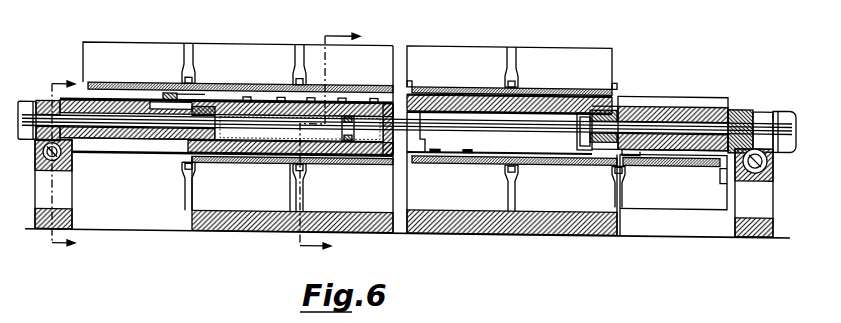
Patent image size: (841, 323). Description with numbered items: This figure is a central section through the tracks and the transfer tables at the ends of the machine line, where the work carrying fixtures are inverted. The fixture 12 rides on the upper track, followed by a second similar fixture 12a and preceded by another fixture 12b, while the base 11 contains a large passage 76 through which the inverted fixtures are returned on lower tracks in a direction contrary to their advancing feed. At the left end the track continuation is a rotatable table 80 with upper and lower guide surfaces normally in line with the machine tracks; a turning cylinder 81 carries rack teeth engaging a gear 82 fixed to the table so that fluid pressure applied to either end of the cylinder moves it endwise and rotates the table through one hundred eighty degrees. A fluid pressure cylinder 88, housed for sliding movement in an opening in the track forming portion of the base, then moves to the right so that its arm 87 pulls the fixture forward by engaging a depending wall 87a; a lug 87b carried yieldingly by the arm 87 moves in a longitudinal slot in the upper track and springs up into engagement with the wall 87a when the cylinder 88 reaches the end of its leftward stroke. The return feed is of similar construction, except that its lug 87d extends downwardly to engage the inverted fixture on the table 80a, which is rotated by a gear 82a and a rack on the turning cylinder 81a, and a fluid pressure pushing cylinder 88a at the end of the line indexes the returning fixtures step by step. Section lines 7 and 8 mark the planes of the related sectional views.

The section line 7- 7 is at (63, 164).
The section line 8- 8 is at (330, 148).
The base 11 is at (518, 225).
The fixture 12 is at (358, 46).
The second fixture 12a is at (273, 46).
The fixture 12b is at (435, 48).
The passage 76 is at (257, 205).
The rotatable table 80 is at (82, 95).
The rotatable table 80a is at (717, 89).
The turning cylinder 81 is at (38, 159).
The turning cylinder 81a is at (737, 182).
The gear 82 is at (36, 100).
The gear 82a is at (767, 102).
The arm 87 is at (203, 97).
The depending wall 87a is at (185, 79).
The lug 87b is at (163, 93).
The lug 87d is at (637, 160).
The fluid pressure cylinder 88 is at (368, 119).
The fluid pressure pushing cylinder 88a is at (545, 121).